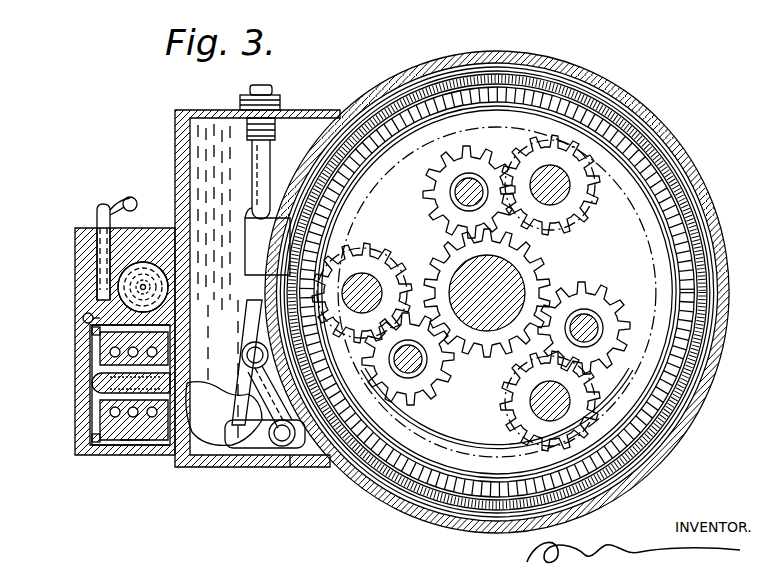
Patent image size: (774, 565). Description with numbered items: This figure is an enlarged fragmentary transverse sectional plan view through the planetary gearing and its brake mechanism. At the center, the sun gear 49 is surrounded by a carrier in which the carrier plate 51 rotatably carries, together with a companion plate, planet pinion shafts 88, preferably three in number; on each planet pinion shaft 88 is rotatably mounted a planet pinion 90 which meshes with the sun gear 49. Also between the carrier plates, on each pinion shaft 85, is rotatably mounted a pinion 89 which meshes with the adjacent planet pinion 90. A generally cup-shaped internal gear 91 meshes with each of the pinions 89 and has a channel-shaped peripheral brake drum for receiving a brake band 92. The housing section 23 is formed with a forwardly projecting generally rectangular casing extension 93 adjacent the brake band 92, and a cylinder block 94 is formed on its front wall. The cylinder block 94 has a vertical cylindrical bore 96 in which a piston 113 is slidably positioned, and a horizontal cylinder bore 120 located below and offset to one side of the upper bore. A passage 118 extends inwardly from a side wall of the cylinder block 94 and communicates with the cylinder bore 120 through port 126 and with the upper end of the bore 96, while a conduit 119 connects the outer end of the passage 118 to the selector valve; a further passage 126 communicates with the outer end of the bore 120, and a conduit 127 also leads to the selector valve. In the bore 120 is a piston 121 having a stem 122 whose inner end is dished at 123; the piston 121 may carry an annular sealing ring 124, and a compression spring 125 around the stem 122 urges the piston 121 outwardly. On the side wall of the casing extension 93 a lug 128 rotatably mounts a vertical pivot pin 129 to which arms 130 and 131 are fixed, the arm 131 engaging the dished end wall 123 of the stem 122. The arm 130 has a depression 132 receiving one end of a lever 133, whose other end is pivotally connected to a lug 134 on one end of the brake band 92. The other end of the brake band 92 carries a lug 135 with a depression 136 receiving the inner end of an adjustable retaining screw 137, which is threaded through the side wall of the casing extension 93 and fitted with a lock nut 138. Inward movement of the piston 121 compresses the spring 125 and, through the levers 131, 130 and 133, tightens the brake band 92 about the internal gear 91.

The housing section 23 is at (704, 398).
The sun gear 49 is at (486, 336).
The carrier plate 51 is at (463, 425).
The pinion shaft 85 is at (368, 268).
The planet pinion shaft 88 is at (455, 191).
The pinion 89 is at (534, 158).
The planet pinion 90 is at (442, 284).
The internal gear 91 is at (407, 478).
The brake band 92 is at (440, 504).
The casing extension 93 is at (216, 468).
The cylinder block 94 is at (80, 230).
The vertical cylindrical bore 96 is at (165, 275).
The piston 113 is at (143, 268).
The passage 118 is at (103, 257).
The conduit 119 is at (100, 210).
The horizontal cylinder bore 120 is at (140, 441).
The piston 121 is at (97, 405).
The stem 122 is at (176, 368).
The dished end wall 123 is at (176, 380).
The annular sealing ring 124 is at (95, 443).
The compression spring 125 is at (130, 441).
The passage 126 is at (83, 318).
The conduit 127 is at (127, 198).
The lug 128 is at (297, 457).
The vertical pivot pin 129 is at (281, 437).
The arm 130 is at (252, 445).
The arm 131 is at (213, 405).
The depression 132 is at (226, 424).
The lever 133 is at (251, 383).
The lug 134 is at (258, 321).
The lug 135 is at (258, 247).
The depression 136 is at (250, 213).
The adjustable retaining screw 137 is at (256, 179).
The lock nut 138 is at (283, 106).